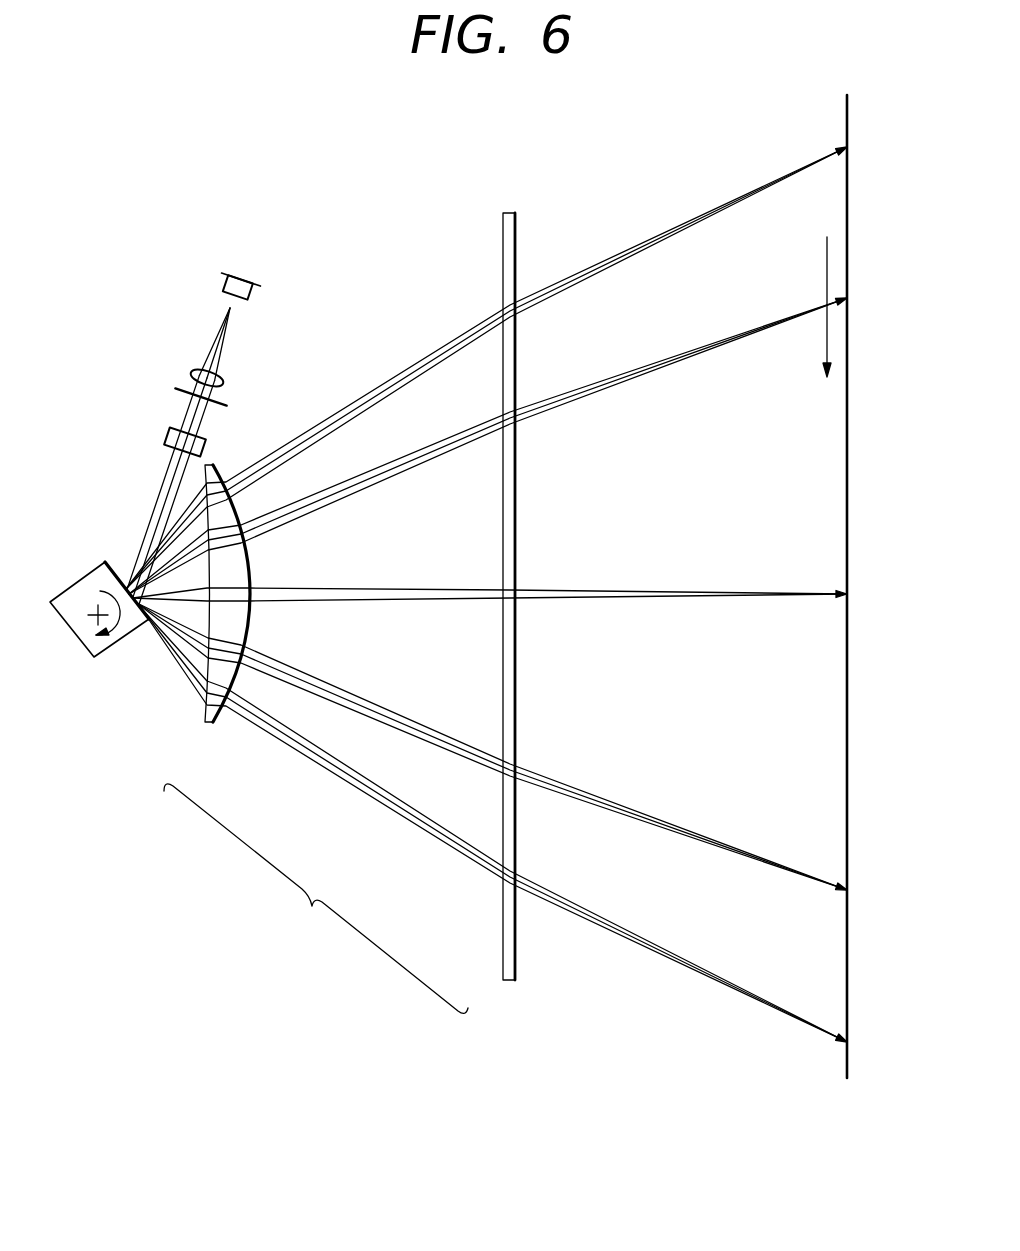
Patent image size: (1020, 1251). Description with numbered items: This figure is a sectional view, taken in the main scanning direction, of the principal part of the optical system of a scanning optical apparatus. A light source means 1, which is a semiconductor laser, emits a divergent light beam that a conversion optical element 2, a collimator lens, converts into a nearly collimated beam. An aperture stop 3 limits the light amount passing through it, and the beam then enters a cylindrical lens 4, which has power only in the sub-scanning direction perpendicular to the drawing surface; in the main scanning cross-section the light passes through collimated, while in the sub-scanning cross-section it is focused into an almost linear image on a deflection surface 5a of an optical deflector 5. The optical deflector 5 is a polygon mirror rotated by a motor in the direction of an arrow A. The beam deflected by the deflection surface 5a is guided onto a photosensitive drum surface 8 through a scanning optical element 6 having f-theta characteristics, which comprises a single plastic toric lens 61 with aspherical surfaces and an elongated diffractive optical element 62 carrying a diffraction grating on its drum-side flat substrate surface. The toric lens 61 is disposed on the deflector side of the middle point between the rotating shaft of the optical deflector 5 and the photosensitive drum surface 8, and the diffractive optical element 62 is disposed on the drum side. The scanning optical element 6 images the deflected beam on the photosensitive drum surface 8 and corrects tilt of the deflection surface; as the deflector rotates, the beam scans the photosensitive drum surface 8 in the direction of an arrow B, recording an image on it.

The light source means 1 is at (222, 283).
The conversion optical element 2 is at (191, 368).
The aperture stop 3 is at (173, 390).
The cylindrical lens 4 is at (167, 436).
The optical deflector 5 is at (100, 600).
The deflection surface 5a is at (113, 565).
The scanning optical element 6 is at (339, 613).
The toric lens 61 is at (206, 726).
The diffractive optical element 62 is at (502, 940).
The photosensitive drum surface 8 is at (847, 115).
The rotation direction arrow A is at (122, 638).
The scanning direction arrow B is at (827, 265).